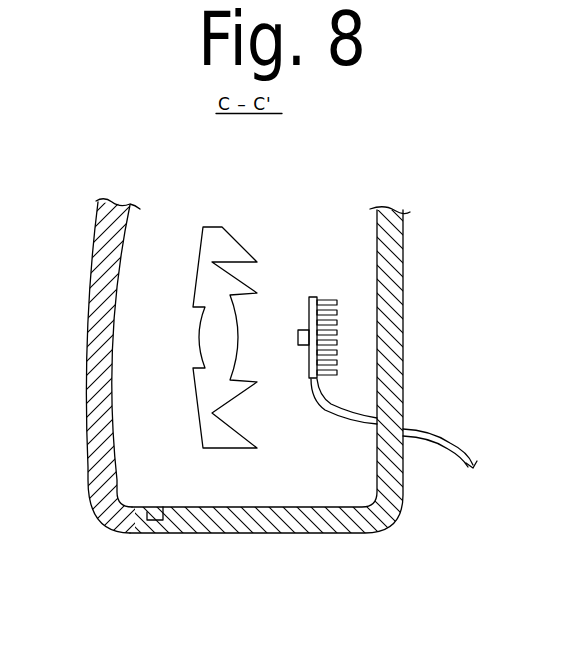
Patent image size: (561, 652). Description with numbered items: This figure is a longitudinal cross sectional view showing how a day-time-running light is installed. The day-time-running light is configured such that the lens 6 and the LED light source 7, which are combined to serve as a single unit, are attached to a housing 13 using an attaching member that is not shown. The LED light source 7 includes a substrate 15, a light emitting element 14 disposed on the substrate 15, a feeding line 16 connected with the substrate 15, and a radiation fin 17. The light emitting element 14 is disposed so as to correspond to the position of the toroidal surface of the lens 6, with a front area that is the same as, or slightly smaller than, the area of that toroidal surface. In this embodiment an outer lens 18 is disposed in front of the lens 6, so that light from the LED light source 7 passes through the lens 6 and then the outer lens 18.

The lens 6 is at (280, 202).
The LED light source 7 is at (365, 379).
The housing 13 is at (340, 533).
The light emitting element 14 is at (305, 346).
The substrate 15 is at (317, 297).
The feeding line 16 is at (436, 433).
The radiation fin 17 is at (337, 352).
The outer lens 18 is at (90, 447).